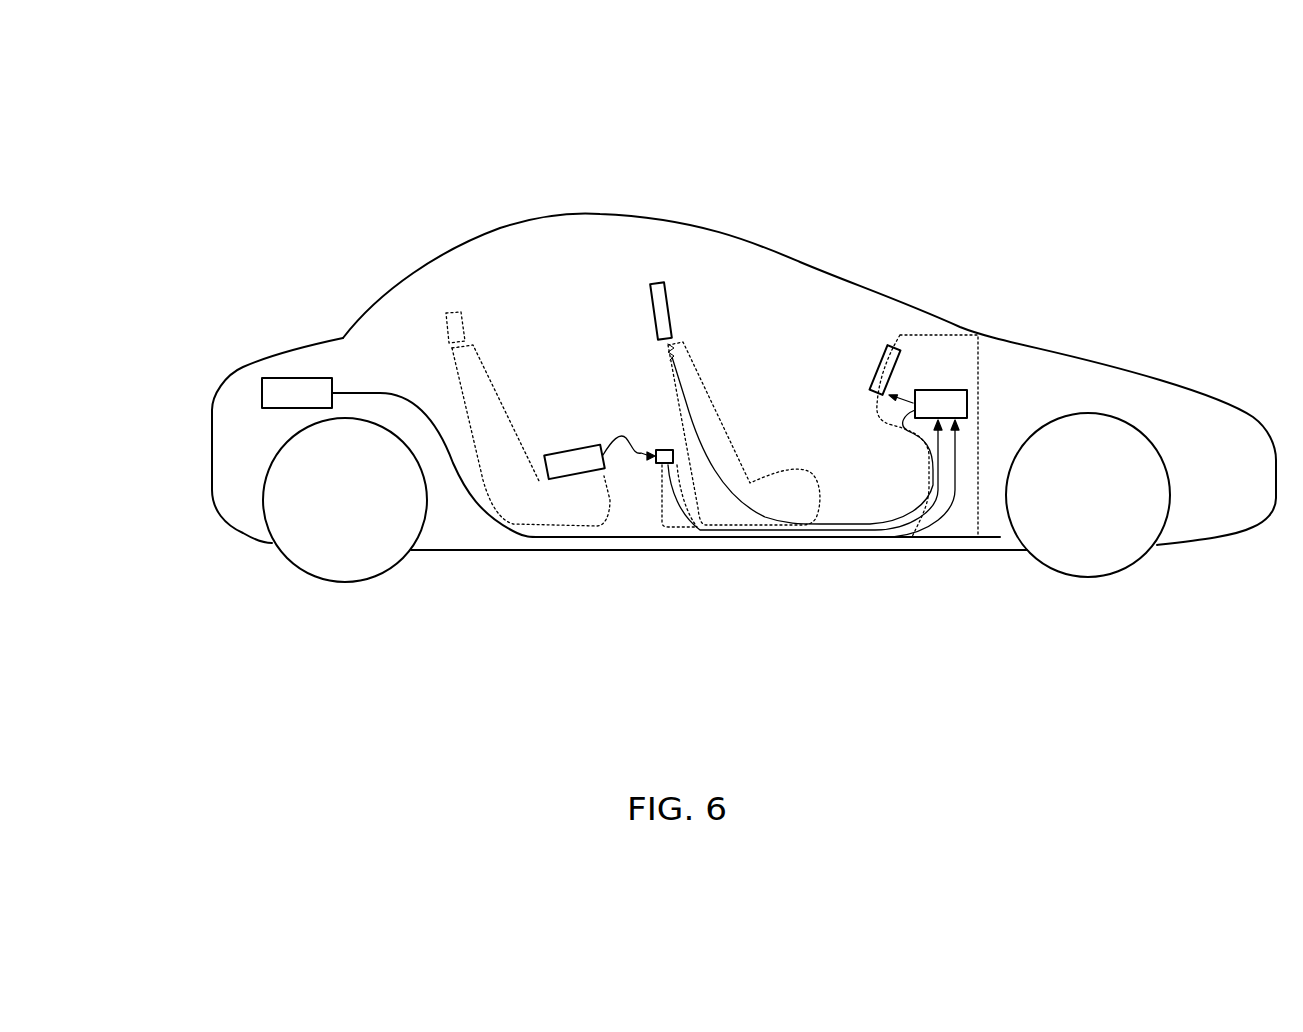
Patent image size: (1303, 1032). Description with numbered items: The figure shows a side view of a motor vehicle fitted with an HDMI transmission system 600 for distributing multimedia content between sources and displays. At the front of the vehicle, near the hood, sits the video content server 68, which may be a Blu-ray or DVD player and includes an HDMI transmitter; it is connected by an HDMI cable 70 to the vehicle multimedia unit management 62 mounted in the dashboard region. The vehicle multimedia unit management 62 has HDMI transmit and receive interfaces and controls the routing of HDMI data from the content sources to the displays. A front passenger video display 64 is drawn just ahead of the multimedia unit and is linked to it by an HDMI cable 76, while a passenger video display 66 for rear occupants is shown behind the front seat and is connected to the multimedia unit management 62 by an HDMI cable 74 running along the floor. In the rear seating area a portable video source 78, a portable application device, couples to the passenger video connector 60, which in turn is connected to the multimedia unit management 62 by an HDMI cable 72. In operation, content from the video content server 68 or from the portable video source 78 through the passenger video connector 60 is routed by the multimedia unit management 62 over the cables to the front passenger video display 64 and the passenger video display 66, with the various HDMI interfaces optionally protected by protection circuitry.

The passenger video connector 60 is at (668, 466).
The vehicle multimedia unit management 62 is at (953, 392).
The front passenger video display 64 is at (888, 346).
The passenger video display 66 is at (654, 283).
The video content server 68 is at (297, 387).
The HDMI cable 70 is at (583, 548).
The HDMI cable 72 is at (777, 533).
The HDMI cable 74 is at (890, 522).
The HDMI cable 76 is at (913, 385).
The portable video source 78 is at (570, 470).
The HDMI transmission system 600 is at (755, 747).